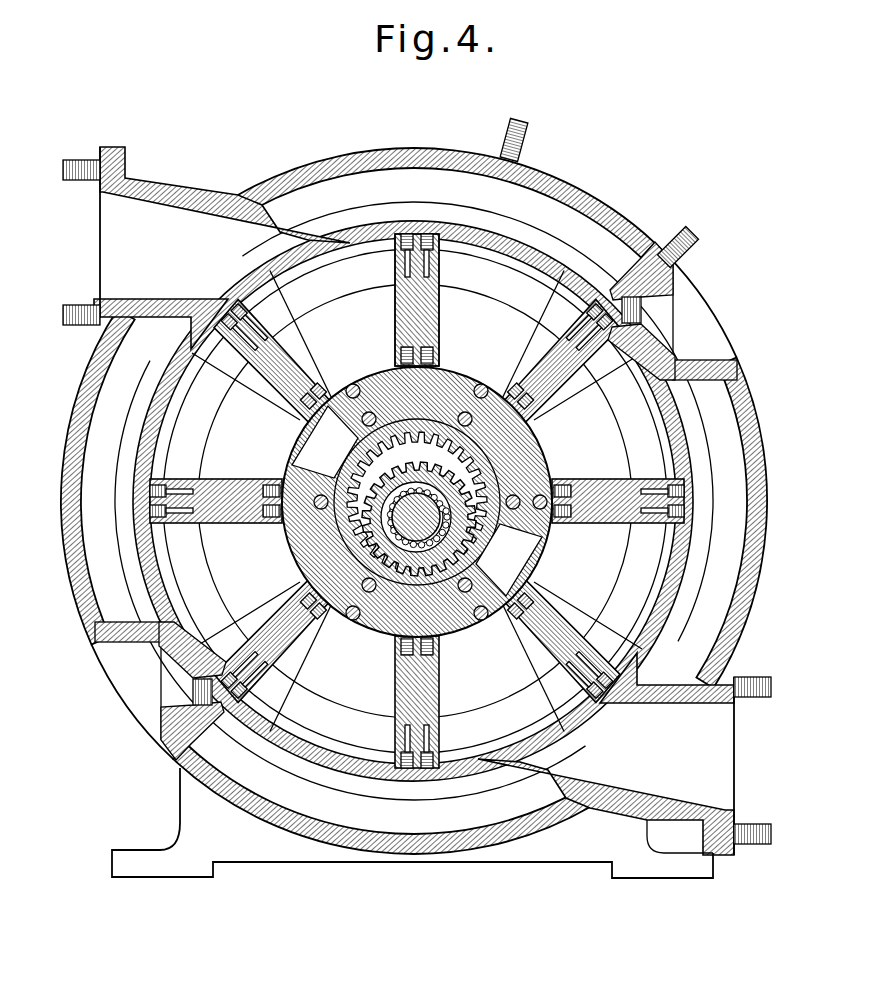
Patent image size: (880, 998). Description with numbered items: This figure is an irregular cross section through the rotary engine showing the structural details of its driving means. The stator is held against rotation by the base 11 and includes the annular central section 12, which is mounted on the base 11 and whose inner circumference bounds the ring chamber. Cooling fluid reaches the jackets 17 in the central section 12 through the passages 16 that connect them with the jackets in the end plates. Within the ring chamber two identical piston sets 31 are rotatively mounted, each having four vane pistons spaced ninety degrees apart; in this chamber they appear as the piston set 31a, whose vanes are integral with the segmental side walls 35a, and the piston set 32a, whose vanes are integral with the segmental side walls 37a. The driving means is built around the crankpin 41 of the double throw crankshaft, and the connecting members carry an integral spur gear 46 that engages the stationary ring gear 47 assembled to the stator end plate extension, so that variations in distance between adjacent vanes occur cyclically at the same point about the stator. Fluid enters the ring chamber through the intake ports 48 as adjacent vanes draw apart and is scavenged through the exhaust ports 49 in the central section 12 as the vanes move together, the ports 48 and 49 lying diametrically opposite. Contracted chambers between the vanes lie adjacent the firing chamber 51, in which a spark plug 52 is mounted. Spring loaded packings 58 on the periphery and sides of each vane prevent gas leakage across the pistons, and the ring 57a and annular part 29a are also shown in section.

The base 11 is at (190, 855).
The annular central section 12 is at (572, 193).
The passages 16 is at (100, 545).
The jackets 17 is at (510, 192).
The chamber 29a is at (417, 496).
The piston set 31 is at (298, 362).
The piston set 31a is at (558, 378).
The piston set 32a is at (430, 327).
The segmental side walls 35a is at (397, 300).
The segmental side walls 37a is at (507, 283).
The crankpin 41 is at (393, 612).
The spur gear 46 is at (405, 487).
The ring gear 47 is at (510, 472).
The ports 48 is at (305, 434).
The ports 49 is at (165, 215).
The firing chamber 51 is at (617, 297).
The spark plug 52 is at (640, 312).
The chamber wall 57a is at (367, 242).
The spring loaded packings 58 is at (265, 305).